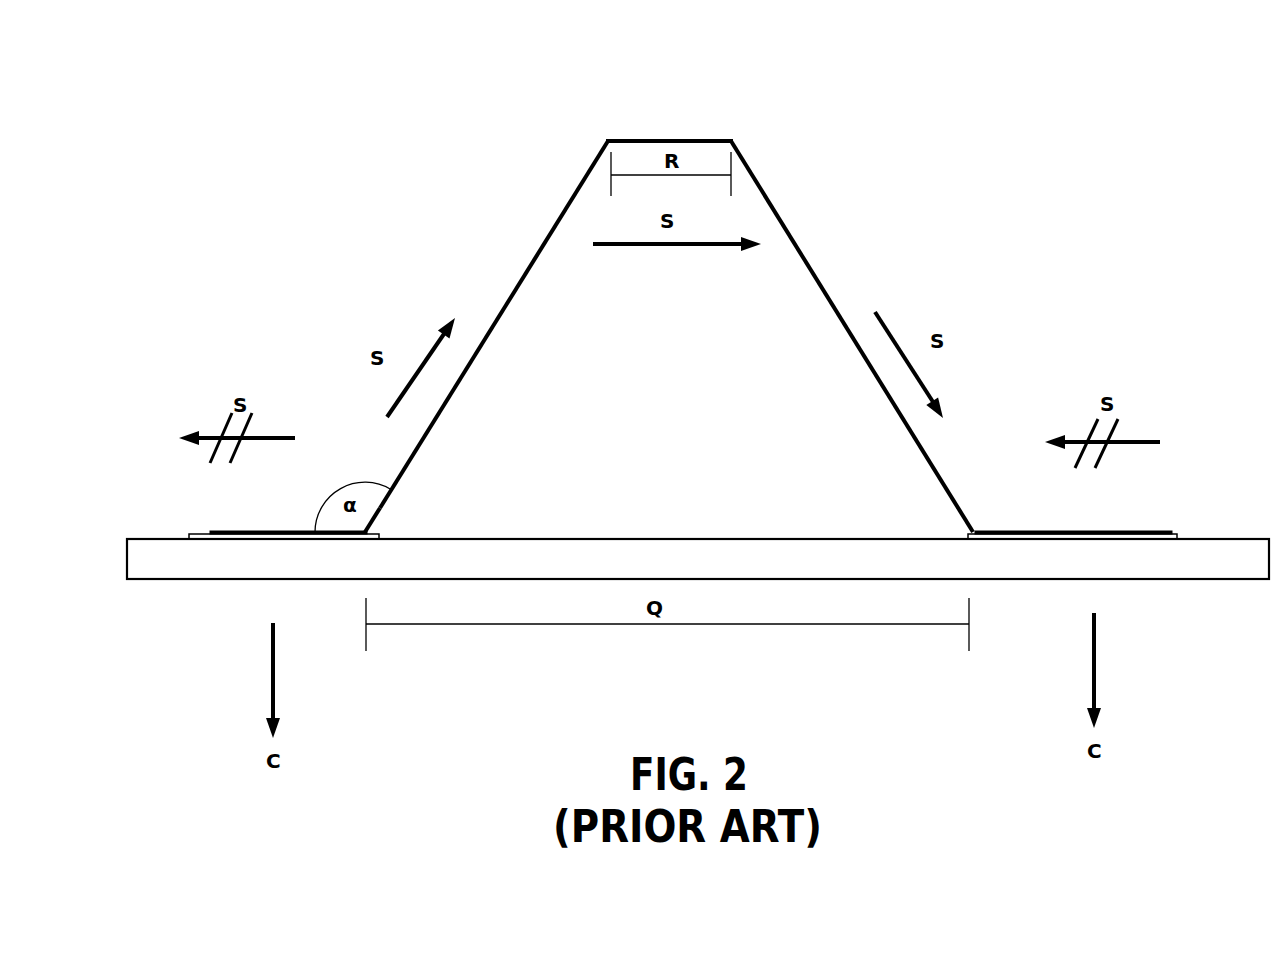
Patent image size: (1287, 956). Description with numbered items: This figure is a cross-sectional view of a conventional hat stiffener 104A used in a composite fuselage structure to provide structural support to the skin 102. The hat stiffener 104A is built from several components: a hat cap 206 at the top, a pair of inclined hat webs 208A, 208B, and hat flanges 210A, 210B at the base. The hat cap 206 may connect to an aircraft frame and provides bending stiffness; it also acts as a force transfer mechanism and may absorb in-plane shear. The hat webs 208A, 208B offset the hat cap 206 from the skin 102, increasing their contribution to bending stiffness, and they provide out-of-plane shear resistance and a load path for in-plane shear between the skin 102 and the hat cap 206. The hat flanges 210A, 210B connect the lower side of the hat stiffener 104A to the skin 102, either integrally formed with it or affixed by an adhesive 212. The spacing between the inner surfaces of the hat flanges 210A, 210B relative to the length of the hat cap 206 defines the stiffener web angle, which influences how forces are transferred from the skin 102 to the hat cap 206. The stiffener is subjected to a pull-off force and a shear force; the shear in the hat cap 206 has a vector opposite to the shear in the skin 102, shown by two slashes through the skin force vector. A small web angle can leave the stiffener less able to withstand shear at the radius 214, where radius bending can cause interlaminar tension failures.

The skin 102 is at (720, 539).
The hat stiffener 104A is at (669, 293).
The hat cap 206 is at (685, 140).
The hat web 208A is at (510, 294).
The hat web 208B is at (826, 288).
The hat flange 210A is at (303, 532).
The hat flange 210B is at (1075, 532).
The adhesive 212 is at (200, 535).
The radius 214 is at (386, 524).